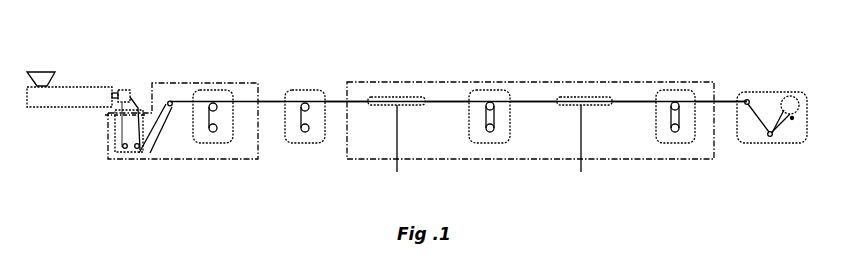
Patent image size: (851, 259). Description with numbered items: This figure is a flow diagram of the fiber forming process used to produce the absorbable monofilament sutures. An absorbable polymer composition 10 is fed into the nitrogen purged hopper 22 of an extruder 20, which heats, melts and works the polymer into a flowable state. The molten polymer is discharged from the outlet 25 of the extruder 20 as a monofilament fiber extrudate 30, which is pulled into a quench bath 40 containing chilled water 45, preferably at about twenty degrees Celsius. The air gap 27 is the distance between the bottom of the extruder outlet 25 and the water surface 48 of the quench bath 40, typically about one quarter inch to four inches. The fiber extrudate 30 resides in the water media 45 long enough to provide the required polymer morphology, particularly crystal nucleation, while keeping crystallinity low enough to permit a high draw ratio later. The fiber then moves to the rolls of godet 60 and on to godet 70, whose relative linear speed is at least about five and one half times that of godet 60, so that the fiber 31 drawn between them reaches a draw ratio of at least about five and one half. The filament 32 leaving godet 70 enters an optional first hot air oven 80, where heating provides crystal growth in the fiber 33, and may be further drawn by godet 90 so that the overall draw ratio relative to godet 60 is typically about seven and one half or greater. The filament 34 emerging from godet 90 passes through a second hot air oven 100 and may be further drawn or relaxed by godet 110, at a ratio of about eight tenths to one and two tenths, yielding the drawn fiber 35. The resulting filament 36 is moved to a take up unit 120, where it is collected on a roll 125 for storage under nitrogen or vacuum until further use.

The absorbable polymer composition 10 is at (43, 62).
The extruder 20 is at (71, 86).
The nitrogen purged hopper 22 is at (47, 84).
The outlet 25 is at (123, 89).
The air gap 27 is at (137, 111).
The monofilament fiber extrudate 30 is at (122, 123).
The fiber undergoing drawing 31 is at (270, 102).
The filament 32 is at (335, 102).
The fiber 33 is at (440, 102).
The filament 34 is at (528, 102).
The drawn fiber 35 is at (625, 102).
The resulting filament 36 is at (722, 102).
The quench bath 40 is at (151, 136).
The chilled water 45 is at (145, 125).
The water surface 48 is at (130, 118).
The godet 60 is at (212, 145).
The godet 70 is at (305, 145).
The first hot air oven 80 is at (396, 147).
The godet 90 is at (490, 145).
The second hot air oven 100 is at (584, 147).
The godet 110 is at (675, 145).
The take up unit 120 is at (768, 145).
The roll 125 is at (790, 97).